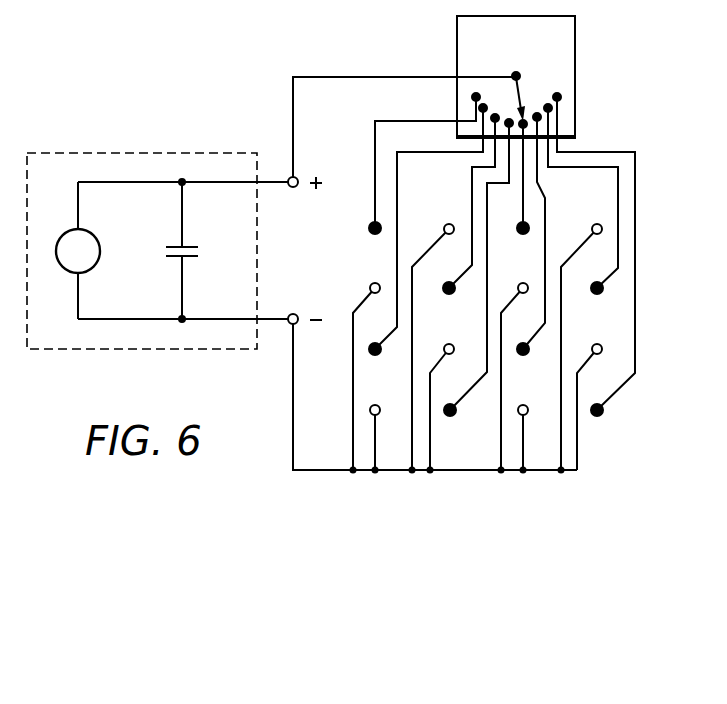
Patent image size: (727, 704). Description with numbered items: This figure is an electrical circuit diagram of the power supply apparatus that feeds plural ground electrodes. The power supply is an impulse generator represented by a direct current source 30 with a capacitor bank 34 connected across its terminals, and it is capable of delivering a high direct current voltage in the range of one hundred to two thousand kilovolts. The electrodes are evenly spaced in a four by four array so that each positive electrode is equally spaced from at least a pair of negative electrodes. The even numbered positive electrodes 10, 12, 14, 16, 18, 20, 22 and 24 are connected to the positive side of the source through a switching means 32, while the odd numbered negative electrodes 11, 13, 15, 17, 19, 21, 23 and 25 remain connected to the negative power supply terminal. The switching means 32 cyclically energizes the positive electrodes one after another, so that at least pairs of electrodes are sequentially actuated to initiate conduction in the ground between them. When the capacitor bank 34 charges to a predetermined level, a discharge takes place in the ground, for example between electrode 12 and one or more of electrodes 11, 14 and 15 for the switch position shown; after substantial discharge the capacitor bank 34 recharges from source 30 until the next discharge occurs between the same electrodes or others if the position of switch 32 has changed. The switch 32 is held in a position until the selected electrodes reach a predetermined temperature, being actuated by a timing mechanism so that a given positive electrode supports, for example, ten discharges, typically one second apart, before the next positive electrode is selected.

The positive electrode 10 is at (369, 229).
The negative electrode 11 is at (456, 223).
The positive electrode 12 is at (530, 234).
The negative electrode 13 is at (596, 223).
The positive electrode 14 is at (591, 290).
The negative electrode 15 is at (527, 283).
The positive electrode 16 is at (446, 292).
The negative electrode 17 is at (370, 284).
The positive electrode 18 is at (369, 354).
The negative electrode 19 is at (455, 343).
The positive electrode 20 is at (529, 354).
The negative electrode 21 is at (605, 347).
The positive electrode 22 is at (594, 416).
The negative electrode 23 is at (527, 414).
The positive electrode 24 is at (447, 416).
The negative electrode 25 is at (369, 410).
The direct current source 30 is at (100, 250).
The switching means 32 is at (578, 62).
The capacitor bank 34 is at (176, 258).